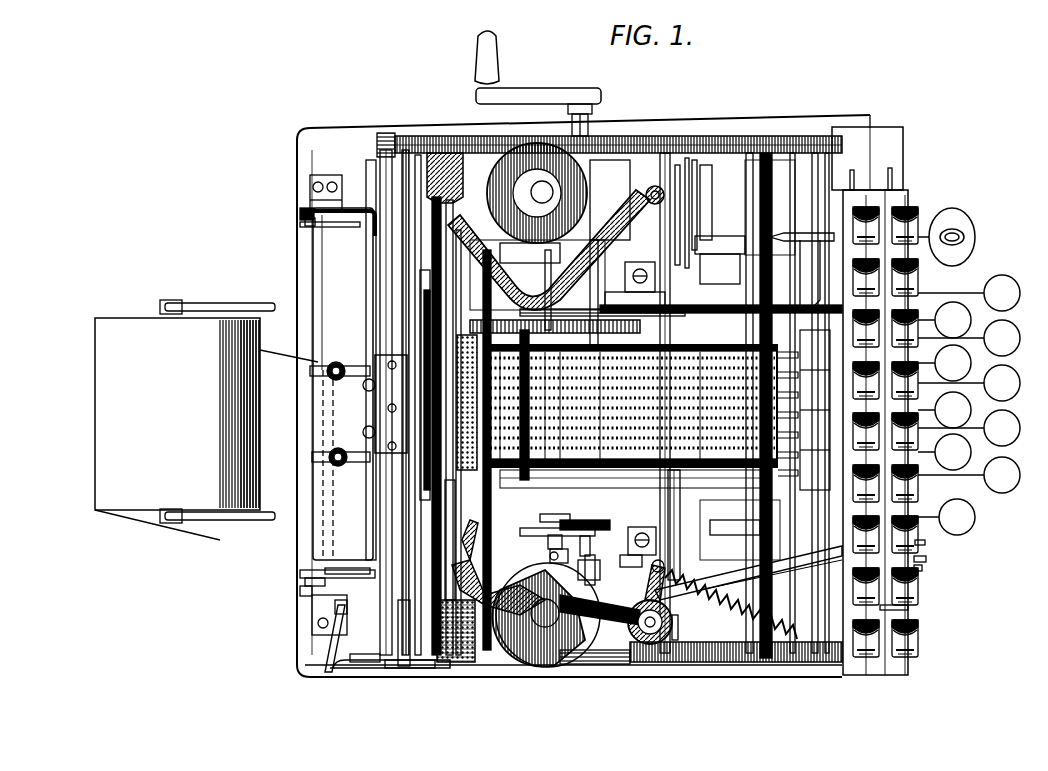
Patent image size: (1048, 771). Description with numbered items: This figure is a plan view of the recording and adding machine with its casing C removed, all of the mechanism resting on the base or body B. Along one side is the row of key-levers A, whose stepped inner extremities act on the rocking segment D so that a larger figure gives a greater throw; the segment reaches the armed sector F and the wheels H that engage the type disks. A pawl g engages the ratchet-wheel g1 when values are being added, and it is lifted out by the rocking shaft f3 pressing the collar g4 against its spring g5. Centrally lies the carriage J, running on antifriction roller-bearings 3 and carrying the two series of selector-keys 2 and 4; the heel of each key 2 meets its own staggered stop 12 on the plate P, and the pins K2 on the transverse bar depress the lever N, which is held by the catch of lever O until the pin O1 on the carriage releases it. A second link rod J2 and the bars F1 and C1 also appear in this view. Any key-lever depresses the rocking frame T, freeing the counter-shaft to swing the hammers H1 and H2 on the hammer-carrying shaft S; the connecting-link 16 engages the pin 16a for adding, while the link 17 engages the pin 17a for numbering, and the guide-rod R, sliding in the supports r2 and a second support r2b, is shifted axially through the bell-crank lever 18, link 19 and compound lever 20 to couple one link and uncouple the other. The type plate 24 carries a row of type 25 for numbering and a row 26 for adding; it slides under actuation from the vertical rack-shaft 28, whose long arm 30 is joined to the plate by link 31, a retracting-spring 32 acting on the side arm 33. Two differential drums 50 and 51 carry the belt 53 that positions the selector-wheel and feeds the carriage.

The selector-key 2 is at (912, 212).
The antifriction roller-bearing 3 is at (680, 522).
The selector-key 4 is at (835, 222).
The stop 12 is at (895, 182).
The connecting-link 16 is at (330, 211).
The lateral pin 16a is at (310, 226).
The link 17 is at (347, 564).
The lateral pin 17a is at (305, 580).
The bell-crank lever 18 is at (326, 636).
The link 19 is at (362, 672).
The compound lever 20 is at (433, 668).
The type plate 24 is at (467, 401).
The row of type 25 is at (430, 430).
The row of type 26 is at (420, 322).
The vertical rack-shaft 28 is at (652, 660).
The long arm 30 is at (566, 615).
The link 31 is at (498, 556).
The retracting-spring 32 is at (731, 604).
The side arm 33 is at (672, 600).
The differential drum 50 is at (676, 628).
The differential drum 51 is at (688, 192).
The metal belt 53 is at (678, 212).
The key-lever A is at (1005, 375).
The base B is at (766, 668).
The casing C is at (206, 413).
The paper roll shaft lower C1 is at (217, 524).
The rocking segment D is at (612, 520).
The armed sector F is at (572, 546).
The bar F1 is at (300, 574).
The wheel H is at (460, 539).
The hammer H1 is at (325, 457).
The hammer H2 is at (320, 374).
The carriage J is at (790, 330).
The link rod J2 is at (748, 573).
The pin K2 is at (905, 610).
The laterally-movable lever N is at (921, 547).
The lever O is at (920, 570).
The pin O1 is at (924, 560).
The plate P is at (898, 158).
The guide-rod R is at (322, 280).
The hammer-carrying shaft S is at (395, 295).
The rocking frame T is at (809, 274).
The rocking shaft f3 is at (597, 570).
The pawl g is at (586, 515).
The ratchet-wheel g1 is at (592, 519).
The collar g4 is at (300, 218).
The spring g5 is at (305, 592).
The support r2 is at (308, 214).
The bar lower r2b is at (315, 598).